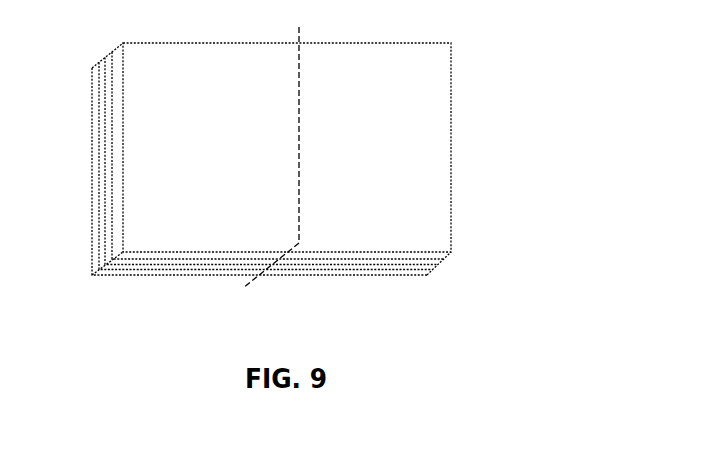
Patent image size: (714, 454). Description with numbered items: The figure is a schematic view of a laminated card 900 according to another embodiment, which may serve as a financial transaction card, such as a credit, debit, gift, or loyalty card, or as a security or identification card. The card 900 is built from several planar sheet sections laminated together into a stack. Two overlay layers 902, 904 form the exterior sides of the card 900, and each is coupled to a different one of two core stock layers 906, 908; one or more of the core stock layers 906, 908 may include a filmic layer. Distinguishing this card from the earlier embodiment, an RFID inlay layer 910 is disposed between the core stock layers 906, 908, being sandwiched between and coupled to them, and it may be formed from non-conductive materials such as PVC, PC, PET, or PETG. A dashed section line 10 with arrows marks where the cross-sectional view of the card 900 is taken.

The laminated card 900 is at (328, 169).
The overlay layer 902 is at (410, 253).
The overlay layer 904 is at (150, 276).
The core stock layer 906 is at (418, 260).
The core stock layer 908 is at (218, 268).
The RFID inlay layer 910 is at (353, 265).
The section line 10 is at (299, 27).